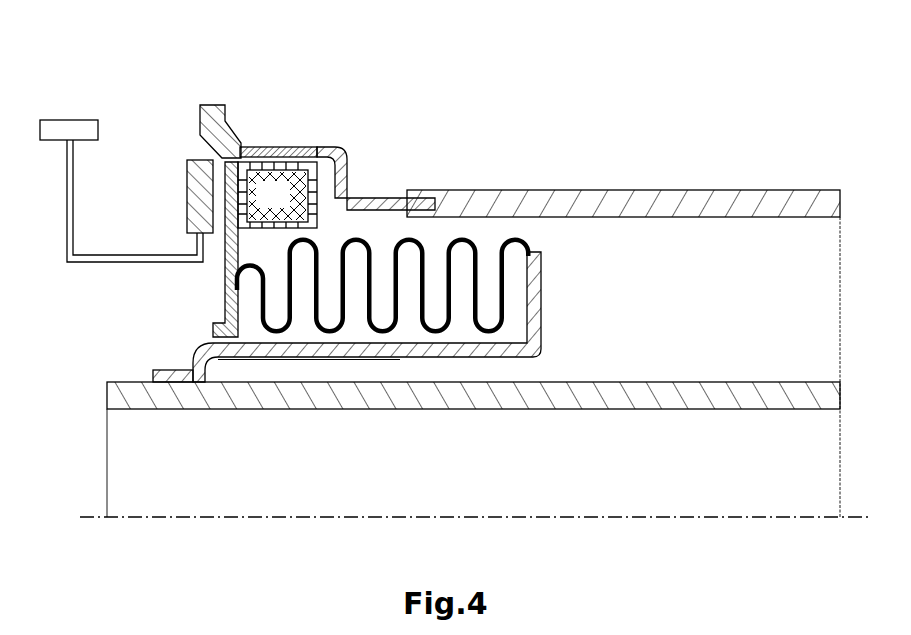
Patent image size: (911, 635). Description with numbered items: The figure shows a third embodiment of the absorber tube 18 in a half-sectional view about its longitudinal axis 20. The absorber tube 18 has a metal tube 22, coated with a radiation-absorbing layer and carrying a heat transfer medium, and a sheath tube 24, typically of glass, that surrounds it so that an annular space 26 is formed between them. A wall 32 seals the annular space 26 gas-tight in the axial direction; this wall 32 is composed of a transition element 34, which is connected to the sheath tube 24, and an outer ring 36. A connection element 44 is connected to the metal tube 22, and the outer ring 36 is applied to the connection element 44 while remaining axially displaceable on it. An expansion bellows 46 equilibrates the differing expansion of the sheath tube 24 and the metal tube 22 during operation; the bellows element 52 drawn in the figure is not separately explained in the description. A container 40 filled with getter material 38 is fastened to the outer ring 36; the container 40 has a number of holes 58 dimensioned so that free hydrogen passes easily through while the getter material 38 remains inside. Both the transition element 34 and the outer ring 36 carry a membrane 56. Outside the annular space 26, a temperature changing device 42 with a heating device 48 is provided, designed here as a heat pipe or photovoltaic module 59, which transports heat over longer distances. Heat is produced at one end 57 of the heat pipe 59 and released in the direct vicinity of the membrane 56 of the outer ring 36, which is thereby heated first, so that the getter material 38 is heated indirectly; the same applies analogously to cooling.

The absorber tube 18 is at (690, 128).
The longitudinal axis 20 is at (148, 513).
The metal tube 22 is at (660, 387).
The sheath tube 24 is at (500, 197).
The annular space 26 is at (702, 286).
The wall 32 is at (163, 115).
The transition element 34 is at (338, 145).
The outer ring 36 is at (218, 315).
The getter material 38 is at (289, 207).
The container 40 is at (293, 147).
The temperature changing device 42 is at (119, 224).
The heating device 48 is at (119, 224).
The heat pipe or photovoltaic module 59 is at (102, 263).
The connection element 44 is at (537, 325).
The expansion bellows 46 is at (447, 227).
The bellows 52 is at (302, 272).
The membrane 56 is at (267, 147).
The end of heat pipe 57 is at (62, 124).
The holes 58 is at (318, 197).